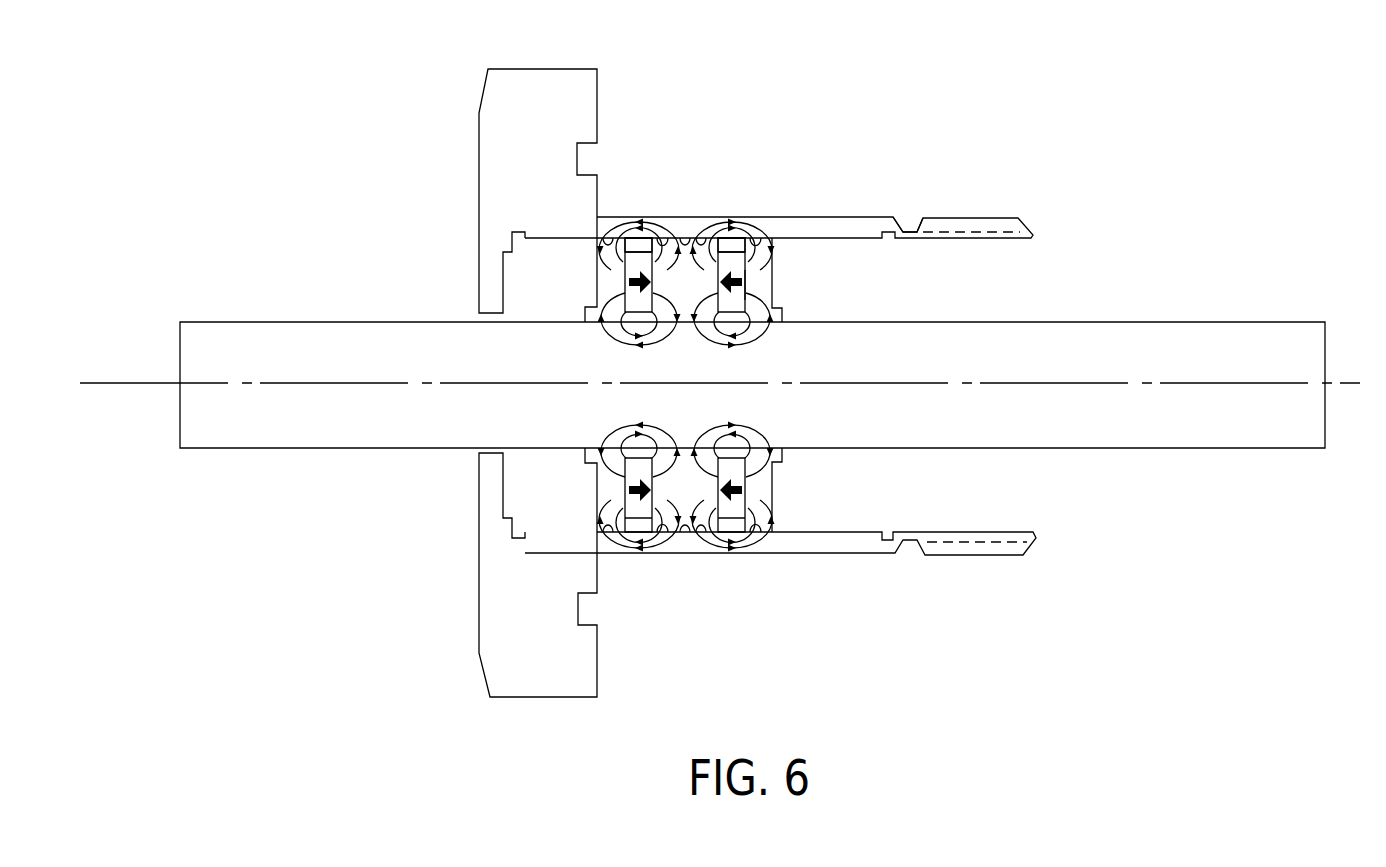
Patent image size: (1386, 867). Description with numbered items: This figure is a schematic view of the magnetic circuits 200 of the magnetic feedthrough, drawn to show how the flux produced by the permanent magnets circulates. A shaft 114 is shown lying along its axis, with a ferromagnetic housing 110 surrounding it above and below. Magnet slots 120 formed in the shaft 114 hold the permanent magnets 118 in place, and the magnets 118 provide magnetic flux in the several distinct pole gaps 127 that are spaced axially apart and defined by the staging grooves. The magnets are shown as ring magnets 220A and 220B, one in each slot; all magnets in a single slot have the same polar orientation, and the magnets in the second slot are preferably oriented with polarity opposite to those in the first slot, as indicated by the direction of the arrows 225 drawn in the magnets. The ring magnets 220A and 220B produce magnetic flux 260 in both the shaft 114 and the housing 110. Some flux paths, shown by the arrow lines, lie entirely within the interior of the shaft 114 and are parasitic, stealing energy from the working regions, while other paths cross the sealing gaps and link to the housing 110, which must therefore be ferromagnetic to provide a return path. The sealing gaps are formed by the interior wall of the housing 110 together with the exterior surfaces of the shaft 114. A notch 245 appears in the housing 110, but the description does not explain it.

The housing 110 is at (845, 217).
The shaft 114 is at (1137, 322).
The permanent magnets 118 is at (625, 280).
The magnet slots 120 is at (640, 247).
The pole gaps 127 is at (603, 235).
The magnetic circuits 200 is at (1112, 123).
The ring magnet A 220A is at (627, 480).
The ring magnet B 220B is at (746, 490).
The arrows 225 is at (737, 290).
The notch 245 is at (913, 217).
The magnetic flux 260 is at (750, 296).